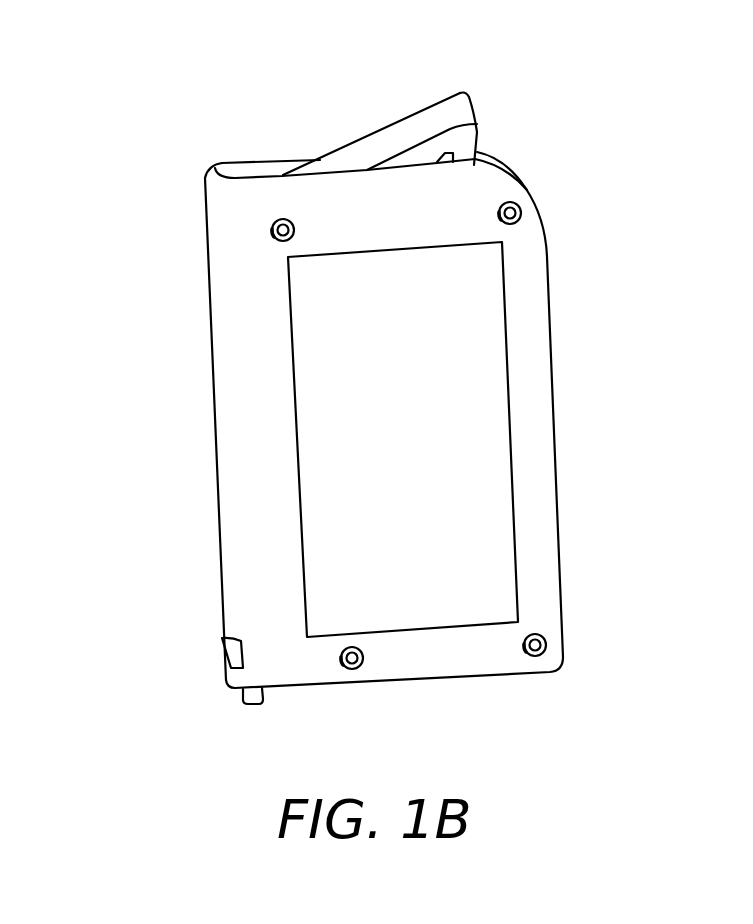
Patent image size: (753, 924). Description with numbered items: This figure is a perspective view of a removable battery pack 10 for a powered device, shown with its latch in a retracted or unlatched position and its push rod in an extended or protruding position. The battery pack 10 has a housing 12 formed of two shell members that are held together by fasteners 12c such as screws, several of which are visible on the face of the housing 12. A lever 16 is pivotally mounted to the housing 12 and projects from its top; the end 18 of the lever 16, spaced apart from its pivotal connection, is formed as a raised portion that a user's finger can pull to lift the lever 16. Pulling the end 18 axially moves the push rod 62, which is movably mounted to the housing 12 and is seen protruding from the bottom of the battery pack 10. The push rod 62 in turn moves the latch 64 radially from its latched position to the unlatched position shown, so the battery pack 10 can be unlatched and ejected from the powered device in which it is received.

The removable battery pack 10 is at (168, 499).
The housing 12 is at (235, 540).
The fasteners 12c is at (273, 227).
The lever 16 is at (403, 123).
The end of the lever 18 is at (462, 105).
The push rod 62 is at (243, 700).
The latch 64 is at (228, 654).